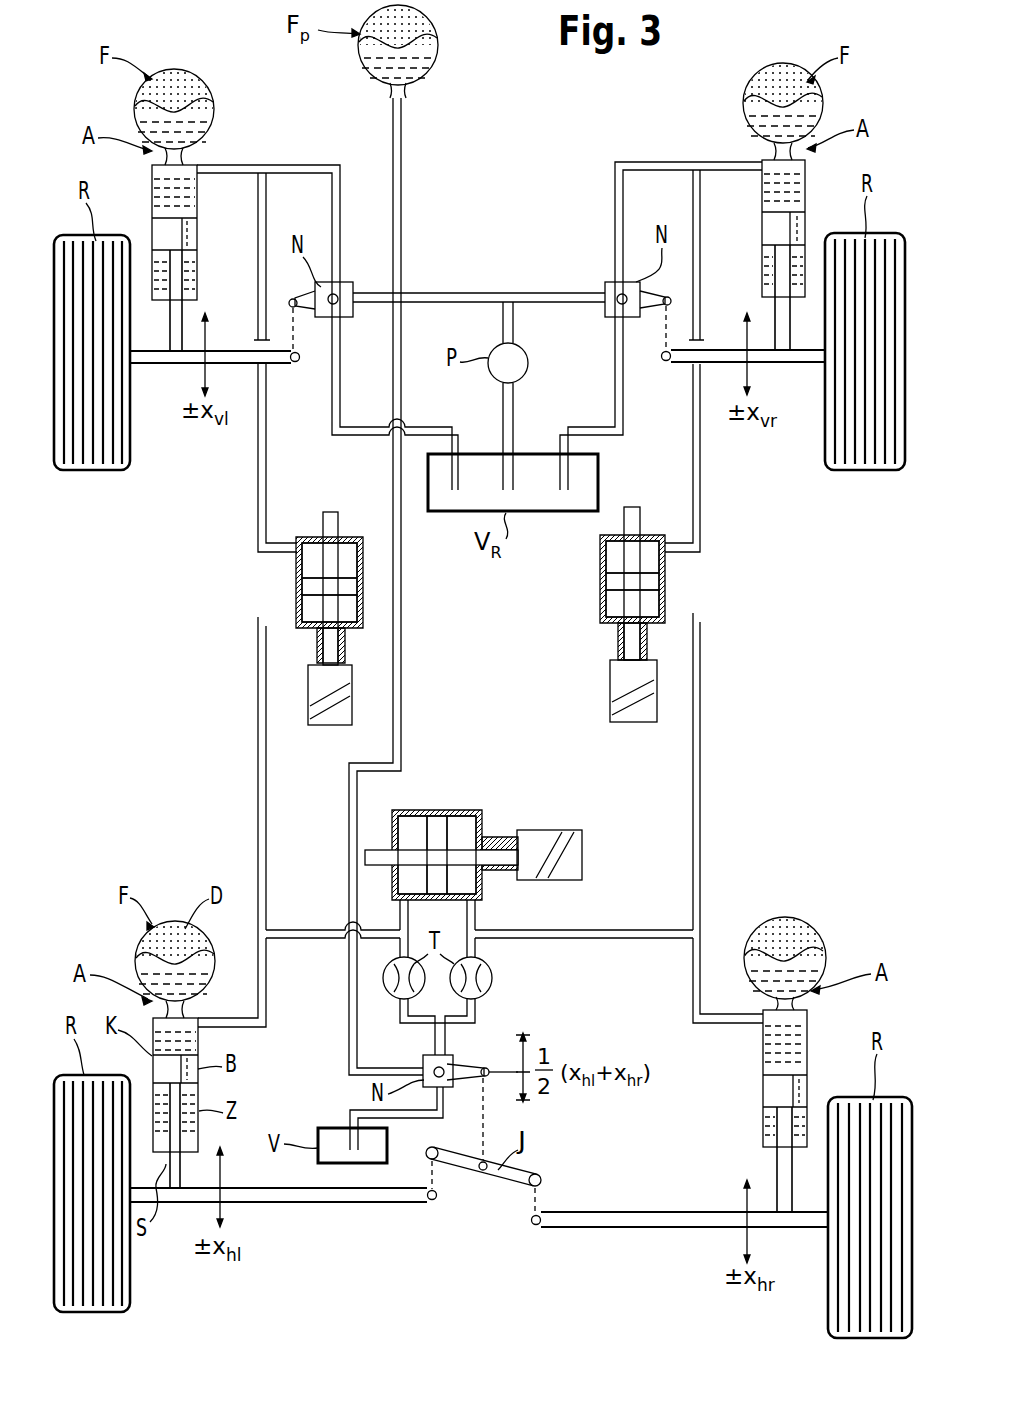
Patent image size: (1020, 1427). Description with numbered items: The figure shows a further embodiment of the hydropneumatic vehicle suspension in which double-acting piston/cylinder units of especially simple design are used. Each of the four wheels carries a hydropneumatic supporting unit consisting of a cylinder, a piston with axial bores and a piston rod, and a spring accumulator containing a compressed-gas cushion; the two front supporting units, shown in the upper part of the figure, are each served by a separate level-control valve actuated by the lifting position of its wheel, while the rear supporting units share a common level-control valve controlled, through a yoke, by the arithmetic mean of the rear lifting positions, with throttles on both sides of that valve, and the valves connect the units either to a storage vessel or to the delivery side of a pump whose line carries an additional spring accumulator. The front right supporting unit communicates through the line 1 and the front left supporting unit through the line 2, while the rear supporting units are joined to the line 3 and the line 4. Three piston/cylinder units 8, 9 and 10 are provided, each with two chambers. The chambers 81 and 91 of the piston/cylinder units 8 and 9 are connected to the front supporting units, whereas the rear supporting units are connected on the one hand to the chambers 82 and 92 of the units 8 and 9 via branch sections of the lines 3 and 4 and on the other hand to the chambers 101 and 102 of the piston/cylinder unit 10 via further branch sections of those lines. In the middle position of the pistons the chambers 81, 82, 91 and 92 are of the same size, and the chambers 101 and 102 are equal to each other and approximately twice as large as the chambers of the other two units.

The line 1 is at (721, 162).
The line 2 is at (231, 165).
The line 3 is at (258, 681).
The line 4 is at (700, 682).
The piston/cylinder unit 8 is at (296, 583).
The chamber 81 is at (349, 563).
The chamber 82 is at (352, 608).
The piston/cylinder unit 9 is at (667, 582).
The chamber 91 is at (608, 557).
The chamber 92 is at (608, 608).
The piston/cylinder unit 10 is at (434, 807).
The chamber 101 is at (414, 822).
The chamber 102 is at (460, 822).